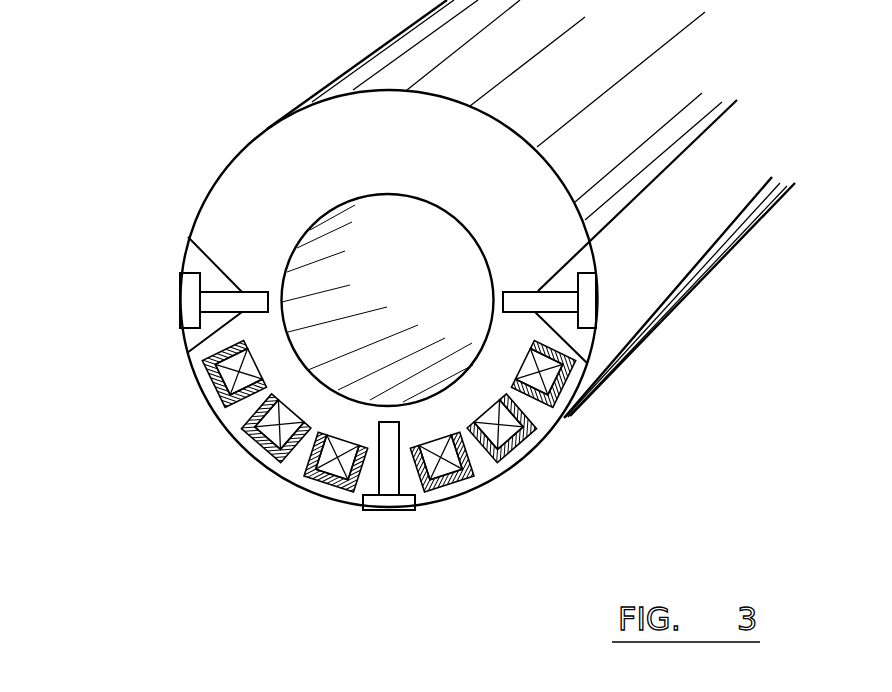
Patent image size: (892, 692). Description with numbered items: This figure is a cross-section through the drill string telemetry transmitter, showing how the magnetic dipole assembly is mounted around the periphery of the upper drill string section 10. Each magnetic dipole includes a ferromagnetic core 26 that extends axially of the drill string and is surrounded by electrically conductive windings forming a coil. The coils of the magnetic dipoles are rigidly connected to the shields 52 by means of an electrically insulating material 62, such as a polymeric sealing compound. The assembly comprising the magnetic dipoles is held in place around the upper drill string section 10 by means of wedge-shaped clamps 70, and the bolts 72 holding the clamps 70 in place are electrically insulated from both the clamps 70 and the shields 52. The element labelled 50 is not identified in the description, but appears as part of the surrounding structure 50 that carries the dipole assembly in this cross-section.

The upper drill string section 10 is at (455, 417).
The ferromagnetic core 26 is at (213, 372).
The stator ring 50 is at (260, 400).
The shields 52 is at (353, 500).
The electrically insulating material 62 is at (518, 438).
The wedge-shaped clamps 70 is at (647, 245).
The bolts 72 is at (188, 299).